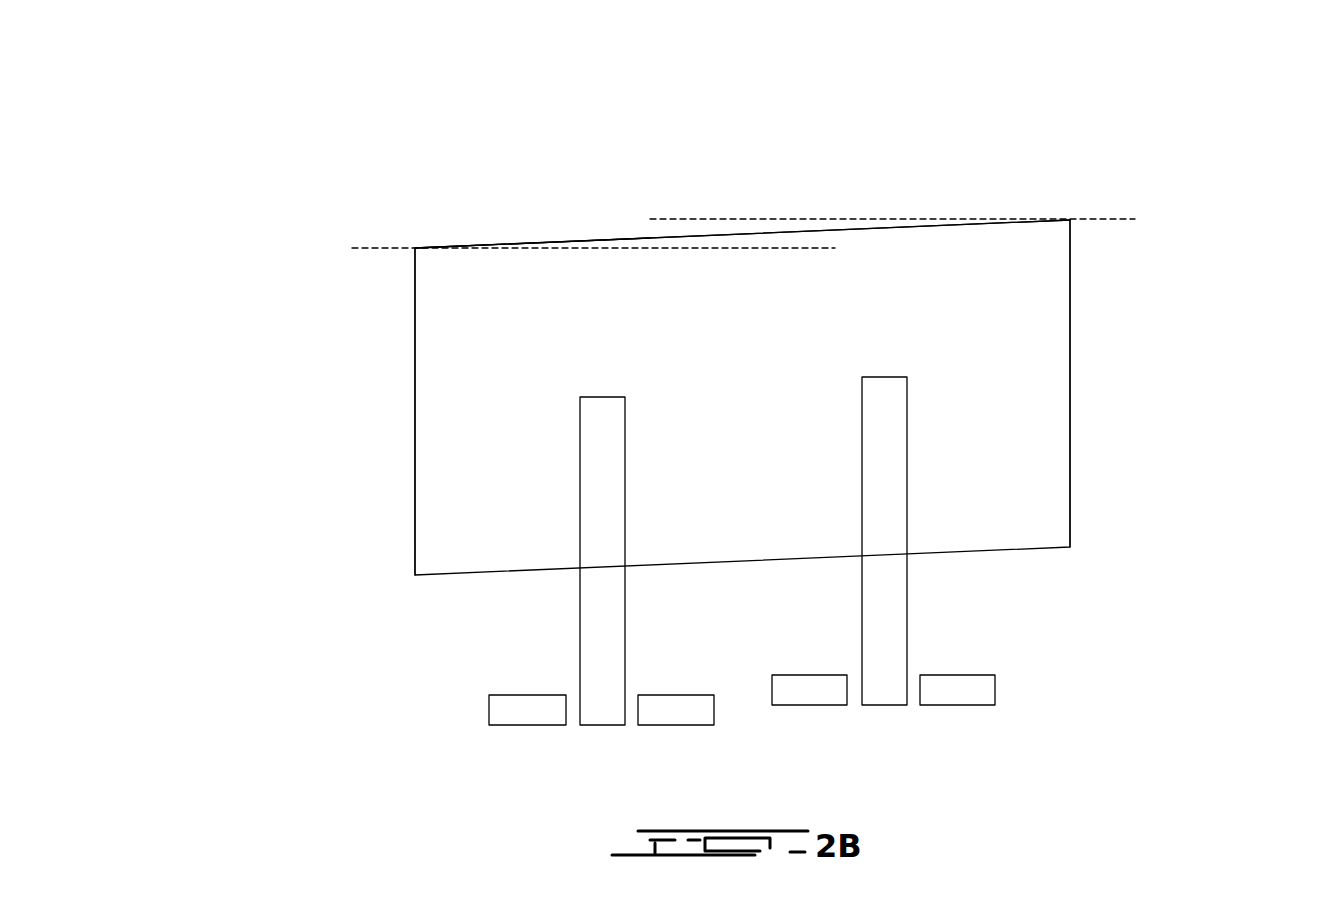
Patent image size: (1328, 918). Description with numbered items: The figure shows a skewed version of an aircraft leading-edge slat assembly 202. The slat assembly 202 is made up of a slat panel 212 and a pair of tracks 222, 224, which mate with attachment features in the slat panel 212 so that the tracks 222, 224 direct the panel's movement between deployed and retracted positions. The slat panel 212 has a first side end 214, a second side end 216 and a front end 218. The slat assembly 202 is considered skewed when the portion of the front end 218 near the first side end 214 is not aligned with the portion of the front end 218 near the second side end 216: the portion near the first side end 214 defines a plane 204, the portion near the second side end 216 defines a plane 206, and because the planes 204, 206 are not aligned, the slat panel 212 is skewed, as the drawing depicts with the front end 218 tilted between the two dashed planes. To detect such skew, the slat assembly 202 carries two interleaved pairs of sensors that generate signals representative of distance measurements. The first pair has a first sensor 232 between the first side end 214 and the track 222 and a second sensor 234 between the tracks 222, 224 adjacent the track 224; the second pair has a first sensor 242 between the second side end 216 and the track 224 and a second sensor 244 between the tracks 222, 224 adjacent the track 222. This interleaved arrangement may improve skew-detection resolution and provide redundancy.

The slat assembly 202 is at (267, 150).
The plane 204 is at (385, 247).
The plane 206 is at (1103, 218).
The slat panel 212 is at (758, 230).
The first side end 214 is at (385, 277).
The second side end 216 is at (1100, 280).
The front end 218 is at (567, 222).
The track 222 is at (580, 470).
The track 224 is at (907, 438).
The first sensor of first pair of sensors 232 is at (523, 695).
The second sensor of first pair of sensors 234 is at (808, 705).
The first sensor of second pair of sensors 242 is at (958, 675).
The second sensor of second pair of sensors 244 is at (672, 725).